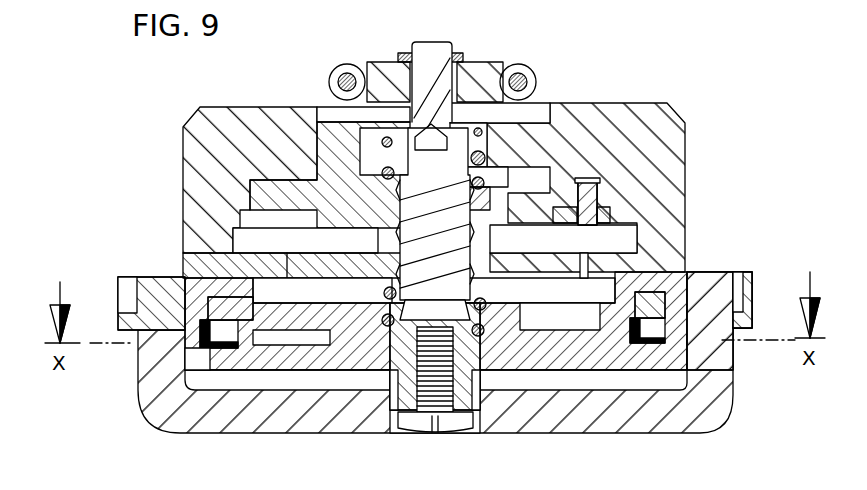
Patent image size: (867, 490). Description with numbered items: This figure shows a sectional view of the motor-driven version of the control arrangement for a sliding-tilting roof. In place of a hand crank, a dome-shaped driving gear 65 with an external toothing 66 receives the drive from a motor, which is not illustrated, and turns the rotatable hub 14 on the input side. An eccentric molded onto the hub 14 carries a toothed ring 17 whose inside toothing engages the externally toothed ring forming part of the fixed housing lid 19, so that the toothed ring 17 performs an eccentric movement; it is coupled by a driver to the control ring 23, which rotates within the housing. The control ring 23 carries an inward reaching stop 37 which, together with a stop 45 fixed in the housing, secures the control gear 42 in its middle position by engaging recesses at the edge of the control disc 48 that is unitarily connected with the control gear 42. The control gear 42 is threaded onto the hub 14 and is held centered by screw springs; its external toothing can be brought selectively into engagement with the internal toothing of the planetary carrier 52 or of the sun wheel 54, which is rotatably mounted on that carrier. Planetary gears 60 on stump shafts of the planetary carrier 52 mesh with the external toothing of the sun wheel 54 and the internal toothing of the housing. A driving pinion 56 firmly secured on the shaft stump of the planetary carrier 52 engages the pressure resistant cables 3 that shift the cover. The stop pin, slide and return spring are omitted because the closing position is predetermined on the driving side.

The pressure resistant cables 3 is at (347, 75).
The rotatable hub 14 is at (408, 378).
The toothed ring 17 is at (550, 322).
The housing lid 19 is at (267, 340).
The control ring 23 is at (218, 350).
The stop 37 is at (620, 270).
The control gear 42 is at (570, 177).
The stop 45 is at (271, 256).
The control disc 48 is at (575, 260).
The planetary carrier 52 is at (532, 143).
The sun wheel 54 is at (318, 175).
The driving pinion 56 is at (477, 77).
The planetary gear 60 is at (633, 218).
The dome-shaped driving gear 65 is at (652, 415).
The external toothing 66 is at (745, 283).